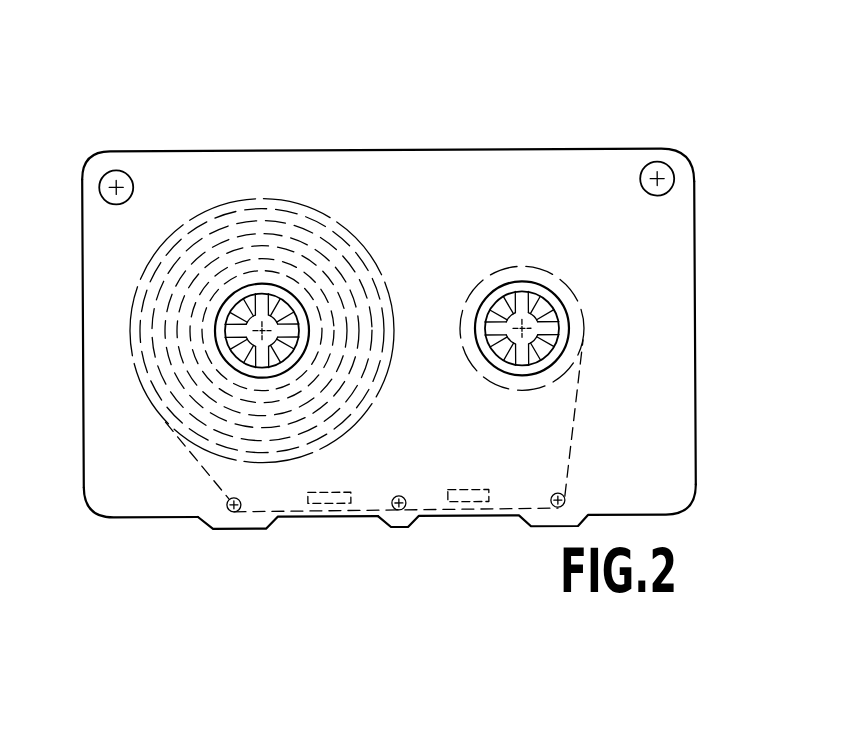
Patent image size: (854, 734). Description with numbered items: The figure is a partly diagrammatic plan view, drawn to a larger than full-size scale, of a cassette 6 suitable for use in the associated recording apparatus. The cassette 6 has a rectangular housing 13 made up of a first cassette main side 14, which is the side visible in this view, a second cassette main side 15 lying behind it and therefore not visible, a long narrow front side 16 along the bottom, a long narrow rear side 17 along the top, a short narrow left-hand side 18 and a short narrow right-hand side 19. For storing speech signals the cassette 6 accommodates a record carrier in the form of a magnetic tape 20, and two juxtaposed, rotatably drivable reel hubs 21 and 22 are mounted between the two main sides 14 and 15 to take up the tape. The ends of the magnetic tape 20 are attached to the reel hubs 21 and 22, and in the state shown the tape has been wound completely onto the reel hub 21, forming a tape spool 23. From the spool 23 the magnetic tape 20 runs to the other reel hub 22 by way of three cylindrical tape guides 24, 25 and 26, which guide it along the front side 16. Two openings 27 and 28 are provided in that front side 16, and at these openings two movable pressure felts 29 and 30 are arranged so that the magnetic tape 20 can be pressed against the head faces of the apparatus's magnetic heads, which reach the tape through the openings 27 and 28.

The cassette 6 is at (581, 126).
The housing 13 is at (90, 157).
The first cassette main side 14 is at (255, 170).
The second cassette main side 15 is at (344, 168).
The front side 16 is at (187, 518).
The rear side 17 is at (171, 149).
The left-hand side 18 is at (83, 360).
The right-hand side 19 is at (695, 346).
The magnetic tape 20 is at (571, 470).
The reel hub 21 is at (262, 284).
The reel hub 22 is at (512, 292).
The tape spool 23 is at (323, 217).
The tape guide 24 is at (240, 496).
The tape guide 25 is at (398, 494).
The tape guide 26 is at (557, 492).
The opening 27 is at (322, 518).
The opening 28 is at (462, 518).
The pressure felt 29 is at (328, 490).
The pressure felt 30 is at (468, 489).